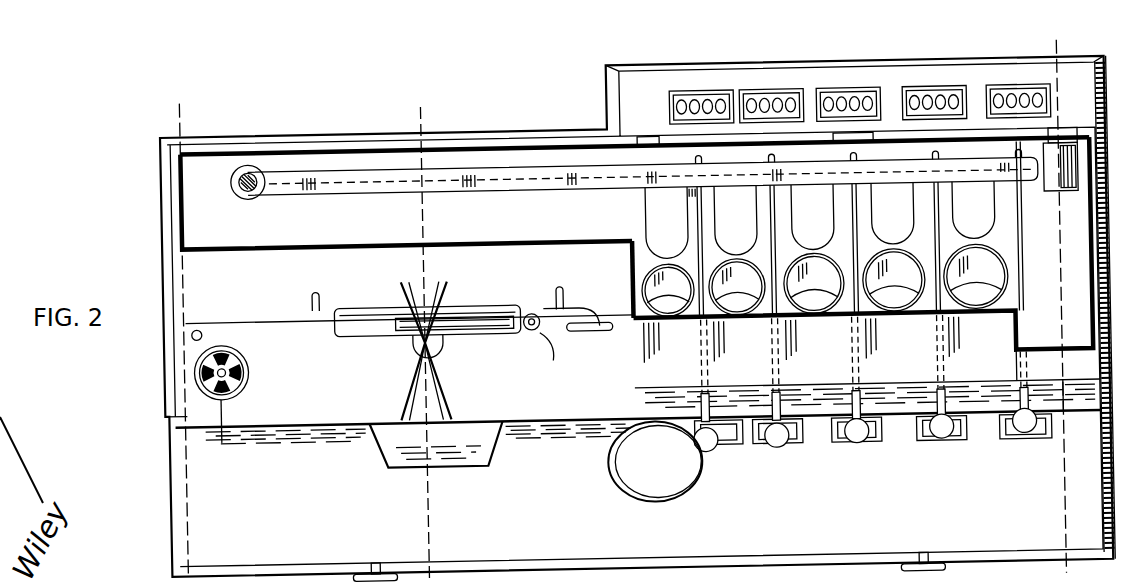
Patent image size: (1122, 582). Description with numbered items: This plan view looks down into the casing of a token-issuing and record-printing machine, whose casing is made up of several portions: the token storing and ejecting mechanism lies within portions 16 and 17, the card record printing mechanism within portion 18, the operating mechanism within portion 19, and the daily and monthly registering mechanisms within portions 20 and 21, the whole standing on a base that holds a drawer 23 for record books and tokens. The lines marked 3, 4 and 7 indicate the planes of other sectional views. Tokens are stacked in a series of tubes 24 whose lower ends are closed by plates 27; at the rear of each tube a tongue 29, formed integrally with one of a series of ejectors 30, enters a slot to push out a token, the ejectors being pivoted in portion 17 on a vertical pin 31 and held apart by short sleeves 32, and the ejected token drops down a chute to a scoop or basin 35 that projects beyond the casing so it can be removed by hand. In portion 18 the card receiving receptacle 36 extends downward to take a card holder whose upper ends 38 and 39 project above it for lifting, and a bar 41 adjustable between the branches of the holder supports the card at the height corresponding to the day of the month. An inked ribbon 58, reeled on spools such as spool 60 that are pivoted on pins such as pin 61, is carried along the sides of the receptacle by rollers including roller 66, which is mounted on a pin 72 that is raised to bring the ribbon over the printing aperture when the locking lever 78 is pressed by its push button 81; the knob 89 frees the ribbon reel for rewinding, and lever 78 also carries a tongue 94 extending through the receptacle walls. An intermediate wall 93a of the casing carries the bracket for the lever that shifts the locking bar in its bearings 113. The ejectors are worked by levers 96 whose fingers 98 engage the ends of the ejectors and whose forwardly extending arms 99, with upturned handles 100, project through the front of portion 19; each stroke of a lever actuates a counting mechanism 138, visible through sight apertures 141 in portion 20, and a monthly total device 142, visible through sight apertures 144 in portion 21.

The section line 3- 3 is at (1068, 301).
The section line 4- 4 is at (419, 334).
The section line 7- 7 is at (187, 329).
The casing portion 16 is at (792, 332).
The casing portion 17 is at (474, 152).
The casing portion 18 is at (327, 420).
The casing portion 19 is at (1057, 425).
The casing portion 20 is at (1031, 456).
The casing portion 21 is at (854, 100).
The drawer 23 is at (945, 581).
The tubes 24 is at (788, 279).
The plates 27 is at (882, 301).
The tongue 29 is at (655, 227).
The ejectors 30 is at (545, 189).
The vertical pin 31 is at (257, 169).
The short sleeve 32 is at (230, 186).
The scoop or basin 35 is at (613, 492).
The card receiving receptacle 36 is at (483, 343).
The upper end of holder 38 is at (334, 304).
The upper end of holder 39 is at (510, 320).
The bar 41 is at (424, 339).
The inked ribbon 58 is at (202, 379).
The spool 60 is at (216, 430).
The pin 61 is at (223, 373).
The roller 66 is at (551, 357).
The pin 72 is at (527, 340).
The locking lever 78 is at (544, 308).
The push button 81 is at (583, 345).
The knob 89 is at (188, 334).
The intermediate wall 93a is at (625, 276).
The tongue 94 is at (393, 343).
The levers 96 is at (856, 233).
The fingers 98 is at (1007, 164).
The forwardly extending arms 99 is at (1021, 304).
The upturned handles 100 is at (777, 460).
The bearings 113 is at (1050, 208).
The counting mechanisms 138 is at (876, 456).
The sight apertures 141 is at (1009, 447).
The devices for giving monthly totals 142 is at (700, 110).
The sight apertures 144 is at (1017, 100).